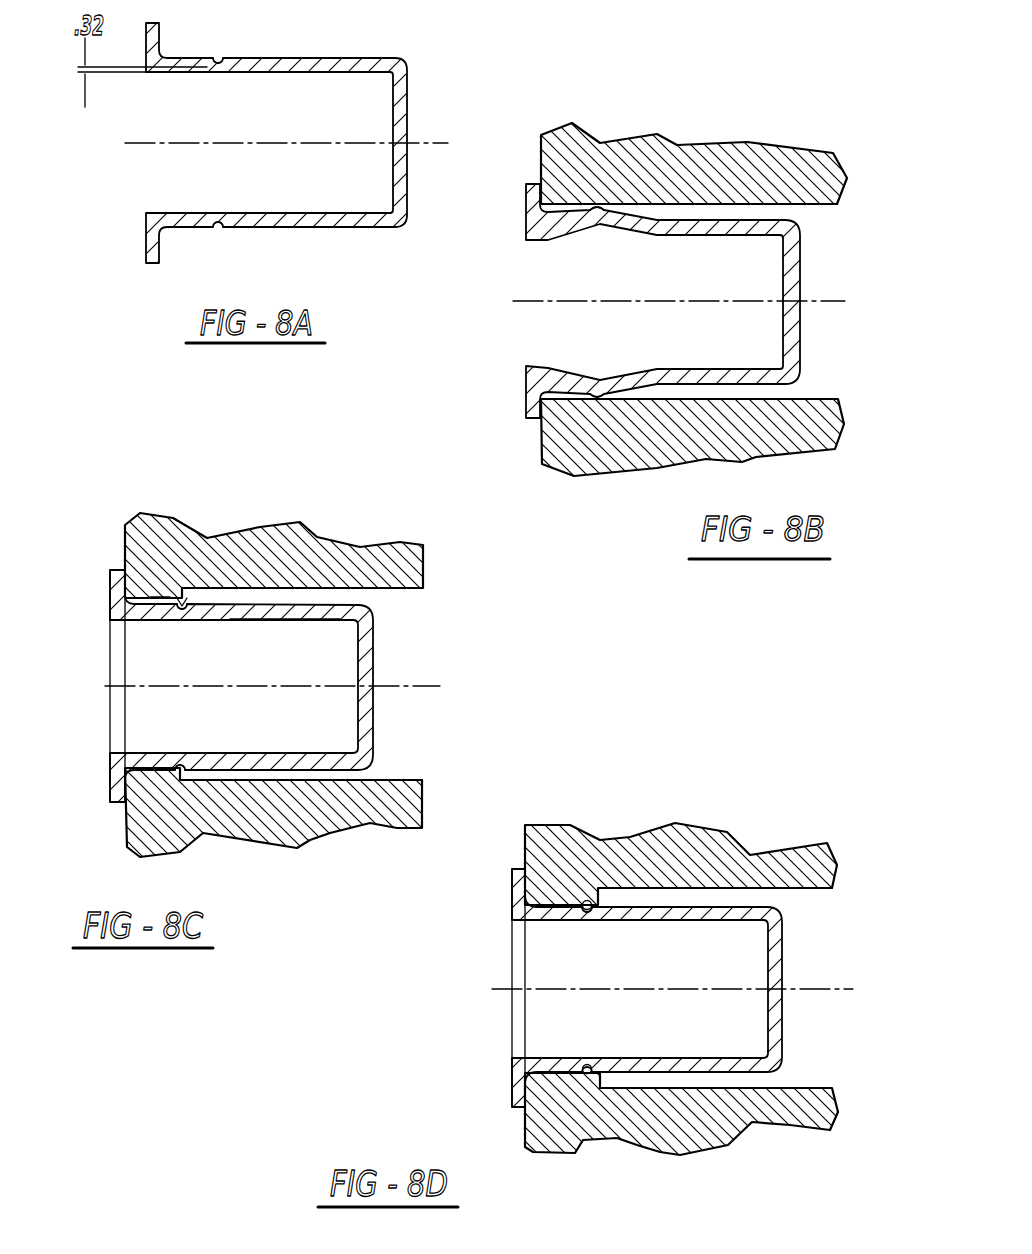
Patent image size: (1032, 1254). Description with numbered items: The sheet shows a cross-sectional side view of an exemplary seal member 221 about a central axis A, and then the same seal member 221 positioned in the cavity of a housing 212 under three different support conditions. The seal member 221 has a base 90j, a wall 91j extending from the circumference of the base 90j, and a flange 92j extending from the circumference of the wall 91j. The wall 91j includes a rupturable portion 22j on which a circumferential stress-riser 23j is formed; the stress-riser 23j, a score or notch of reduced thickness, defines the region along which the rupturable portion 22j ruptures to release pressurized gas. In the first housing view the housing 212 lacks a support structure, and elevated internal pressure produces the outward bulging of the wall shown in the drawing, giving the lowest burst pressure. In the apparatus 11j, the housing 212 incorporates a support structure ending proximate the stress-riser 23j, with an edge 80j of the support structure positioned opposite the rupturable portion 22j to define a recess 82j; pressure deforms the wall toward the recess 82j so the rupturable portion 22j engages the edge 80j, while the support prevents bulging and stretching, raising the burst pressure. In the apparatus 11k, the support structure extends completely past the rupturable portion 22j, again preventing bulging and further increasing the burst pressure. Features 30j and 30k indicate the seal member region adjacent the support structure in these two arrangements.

In FIG. 8A, the central axis A is at (437, 143).
In FIG. 8B, the central axis A is at (833, 302).
In FIG. 8C, the central axis A is at (404, 686).
In FIG. 8D, the central axis A is at (810, 990).
In FIG. 8A, the rupturable portion 22j is at (213, 8).
In FIG. 8B, the rupturable portion 22j is at (590, 208).
In FIG. 8C, the rupturable portion 22j is at (175, 608).
In FIG. 8D, the rupturable portion 22j is at (578, 907).
In FIG. 8A, the stress-riser 23j is at (218, 228).
In FIG. 8B, the stress-riser 23j is at (603, 387).
In FIG. 8C, the stress-riser 23j is at (183, 753).
In FIG. 8D, the stress-riser 23j is at (590, 1066).
In FIG. 8B, the housing 212 is at (627, 432).
In FIG. 8C, the housing 212 is at (252, 812).
In FIG. 8D, the housing 212 is at (625, 1118).
In FIG. 8B, the seal member 221 is at (677, 392).
In FIG. 8C, the apparatus 11j is at (278, 694).
In FIG. 8D, the apparatus 11k is at (654, 986).
In FIG. 8C, the bead 30j is at (182, 612).
In FIG. 8D, the bead 30k is at (558, 907).
In FIG. 8C, the edge 80j is at (153, 608).
In FIG. 8C, the recess 82j is at (343, 597).
In FIG. 8A, the base 90j is at (276, 143).
In FIG. 8B, the base 90j is at (663, 301).
In FIG. 8C, the base 90j is at (370, 725).
In FIG. 8D, the base 90j is at (773, 952).
In FIG. 8C, the wall 91j is at (287, 610).
In FIG. 8D, the wall 91j is at (678, 1063).
In FIG. 8C, the flange 92j is at (110, 788).
In FIG. 8D, the flange 92j is at (510, 1093).